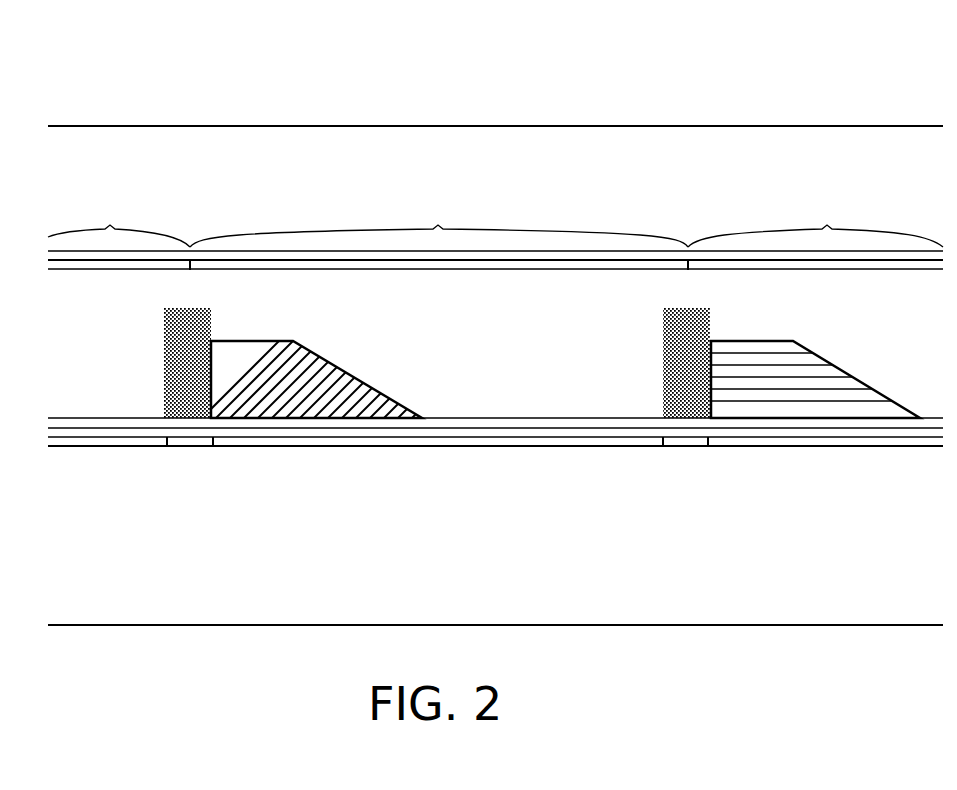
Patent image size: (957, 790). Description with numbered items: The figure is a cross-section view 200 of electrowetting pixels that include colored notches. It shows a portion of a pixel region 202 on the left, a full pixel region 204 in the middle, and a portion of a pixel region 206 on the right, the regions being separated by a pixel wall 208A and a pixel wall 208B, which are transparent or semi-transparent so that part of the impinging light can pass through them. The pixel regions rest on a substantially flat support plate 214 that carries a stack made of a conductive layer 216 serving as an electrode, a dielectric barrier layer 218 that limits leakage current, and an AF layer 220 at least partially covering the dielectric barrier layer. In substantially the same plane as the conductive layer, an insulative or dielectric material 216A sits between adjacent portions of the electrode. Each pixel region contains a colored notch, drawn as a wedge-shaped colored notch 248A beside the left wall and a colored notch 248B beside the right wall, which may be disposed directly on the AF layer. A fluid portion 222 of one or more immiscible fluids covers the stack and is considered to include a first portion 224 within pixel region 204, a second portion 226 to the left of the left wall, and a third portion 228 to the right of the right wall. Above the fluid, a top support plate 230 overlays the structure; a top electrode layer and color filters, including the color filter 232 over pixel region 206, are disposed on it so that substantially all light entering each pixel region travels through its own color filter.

The cross-section view 200 is at (724, 58).
The pixel region 202 is at (119, 232).
The pixel region 204 is at (439, 228).
The pixel region 206 is at (815, 218).
The pixel wall 208A is at (162, 360).
The pixel wall 208B is at (657, 359).
The support plate 214 is at (497, 564).
The conductive layer 216 is at (97, 448).
The insulative material 216A is at (203, 450).
The dielectric barrier layer 218 is at (535, 433).
The AF layer 220 is at (440, 418).
The fluid portion 222 is at (405, 358).
The first portion 224 is at (528, 338).
The second portion / top electrode layer 226 is at (108, 359).
The third portion / color filter 228 is at (140, 273).
The top support plate / color filter 230 is at (343, 186).
The color filter 232 is at (783, 272).
The colored notch 248A is at (335, 396).
The colored notch 248B is at (830, 397).